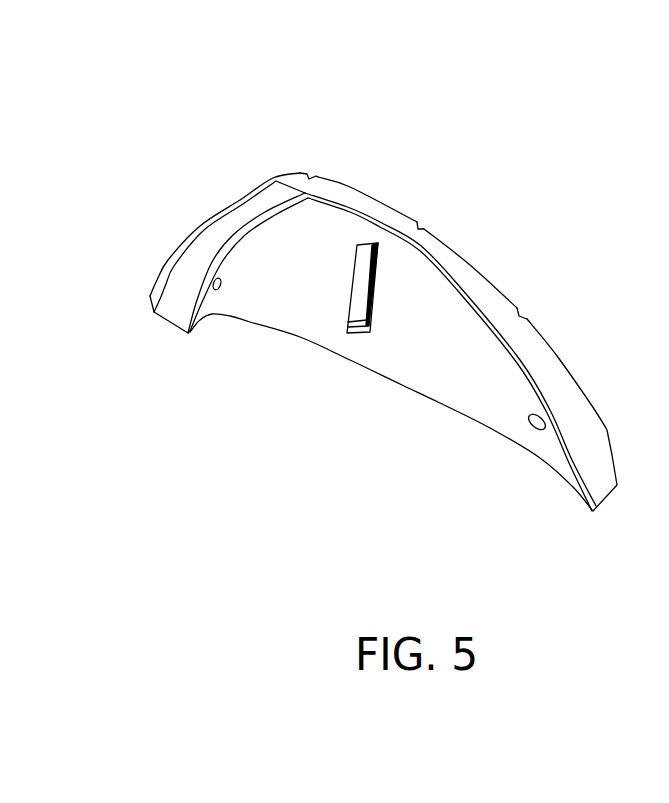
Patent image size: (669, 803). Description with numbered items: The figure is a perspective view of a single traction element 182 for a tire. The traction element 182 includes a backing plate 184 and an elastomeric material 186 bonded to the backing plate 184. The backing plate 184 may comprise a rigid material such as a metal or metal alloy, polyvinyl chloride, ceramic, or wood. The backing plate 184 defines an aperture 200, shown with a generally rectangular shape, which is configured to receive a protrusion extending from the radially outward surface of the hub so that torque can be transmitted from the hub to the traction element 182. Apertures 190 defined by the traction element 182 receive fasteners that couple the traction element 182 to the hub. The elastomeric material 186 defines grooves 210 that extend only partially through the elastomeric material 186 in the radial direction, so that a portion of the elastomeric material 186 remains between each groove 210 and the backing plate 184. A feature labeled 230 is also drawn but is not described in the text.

The traction element 182 is at (209, 116).
The backing plate 184 is at (290, 307).
The elastomeric material 186 is at (204, 246).
The aperture 190 is at (223, 306).
The aperture 200 is at (374, 306).
The groove 210 is at (422, 216).
The tab 230 is at (358, 282).